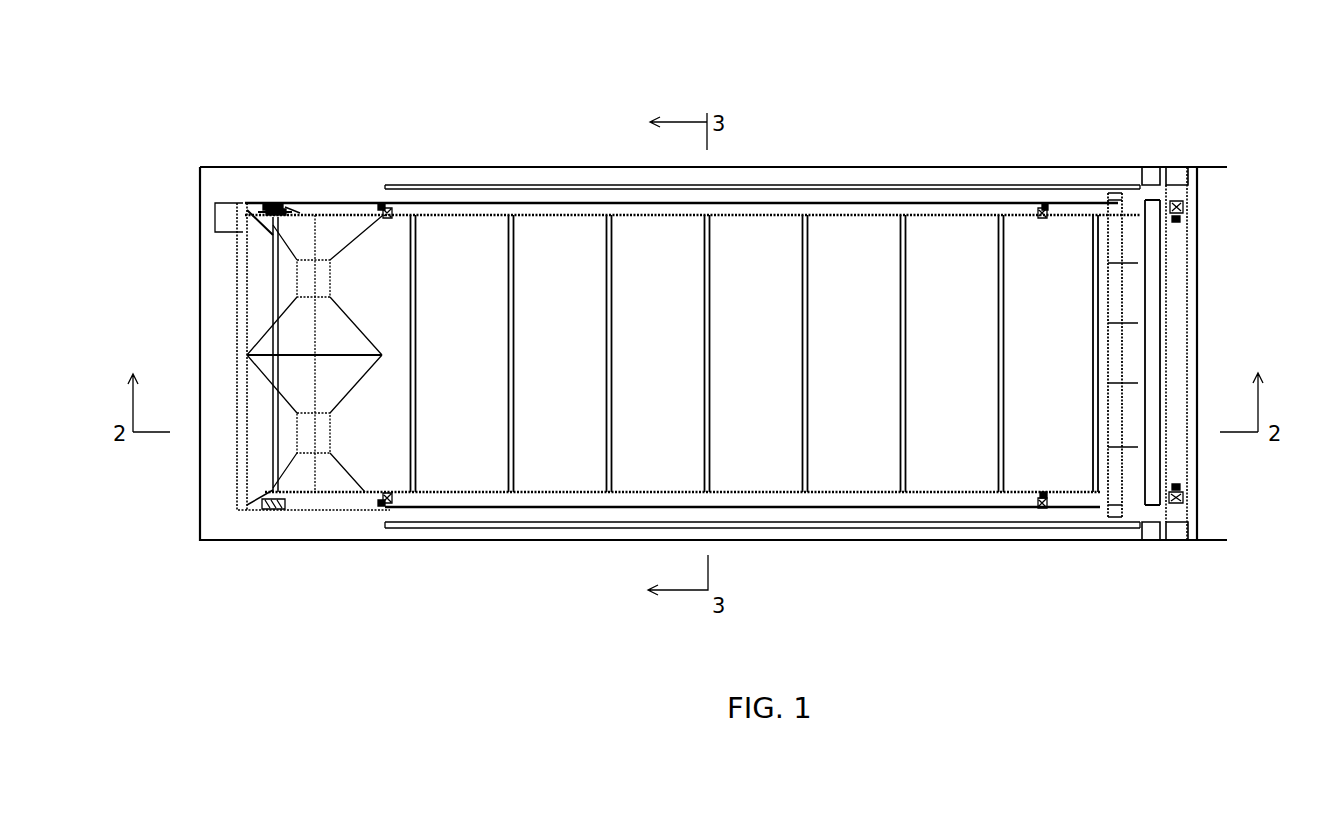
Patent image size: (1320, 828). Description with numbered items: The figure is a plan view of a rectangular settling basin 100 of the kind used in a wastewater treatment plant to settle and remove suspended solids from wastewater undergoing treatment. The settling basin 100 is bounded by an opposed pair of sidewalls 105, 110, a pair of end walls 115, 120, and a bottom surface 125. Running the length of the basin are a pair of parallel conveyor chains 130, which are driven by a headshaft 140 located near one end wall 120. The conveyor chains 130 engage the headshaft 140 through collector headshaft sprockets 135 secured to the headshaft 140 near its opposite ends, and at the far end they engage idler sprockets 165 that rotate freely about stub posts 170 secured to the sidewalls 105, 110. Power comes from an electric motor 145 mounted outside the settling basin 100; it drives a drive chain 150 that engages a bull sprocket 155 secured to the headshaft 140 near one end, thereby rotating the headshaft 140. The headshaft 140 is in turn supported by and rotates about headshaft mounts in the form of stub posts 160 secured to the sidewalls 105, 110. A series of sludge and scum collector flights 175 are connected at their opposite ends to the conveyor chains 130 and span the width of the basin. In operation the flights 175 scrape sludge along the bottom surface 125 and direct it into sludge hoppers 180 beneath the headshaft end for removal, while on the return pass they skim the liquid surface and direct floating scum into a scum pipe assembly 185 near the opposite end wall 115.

The settling basin 100 is at (929, 126).
The sidewall 105 is at (580, 196).
The sidewall 110 is at (580, 528).
The end wall 115 is at (1200, 312).
The end wall 120 is at (238, 307).
The bottom surface 125 is at (668, 381).
The conveyor chains 130 is at (458, 493).
The collector headshaft sprockets 135 is at (290, 506).
The headshaft 140 is at (275, 292).
The electric motor 145 is at (226, 222).
The drive chain 150 is at (263, 205).
The bull sprocket 155 is at (295, 205).
The stub posts 160 is at (272, 505).
The idler sprockets 165 is at (1040, 494).
The stub posts 170 is at (1041, 500).
The sludge and scum collector flights 175 is at (903, 293).
The sludge hoppers 180 is at (268, 380).
The scum pipe assembly 185 is at (1117, 222).